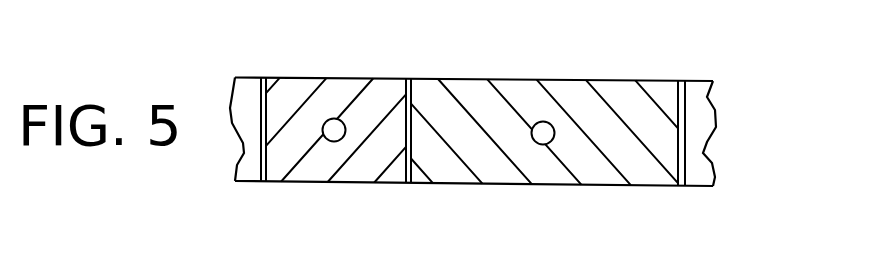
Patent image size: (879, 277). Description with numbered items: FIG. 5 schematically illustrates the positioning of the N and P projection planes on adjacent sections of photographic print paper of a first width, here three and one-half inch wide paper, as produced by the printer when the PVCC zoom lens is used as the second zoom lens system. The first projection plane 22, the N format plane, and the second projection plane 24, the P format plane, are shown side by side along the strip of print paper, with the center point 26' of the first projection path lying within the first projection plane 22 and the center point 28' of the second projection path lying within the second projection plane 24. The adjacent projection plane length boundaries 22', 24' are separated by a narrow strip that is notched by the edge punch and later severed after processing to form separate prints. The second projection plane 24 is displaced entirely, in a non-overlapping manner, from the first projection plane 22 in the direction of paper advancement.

The first projection plane 22 is at (325, 168).
The projection plane length boundary 22' is at (501, 159).
The second projection plane 24 is at (684, 97).
The projection plane length boundary 24' is at (453, 106).
The center point 26' is at (346, 91).
The center point 28' is at (552, 85).